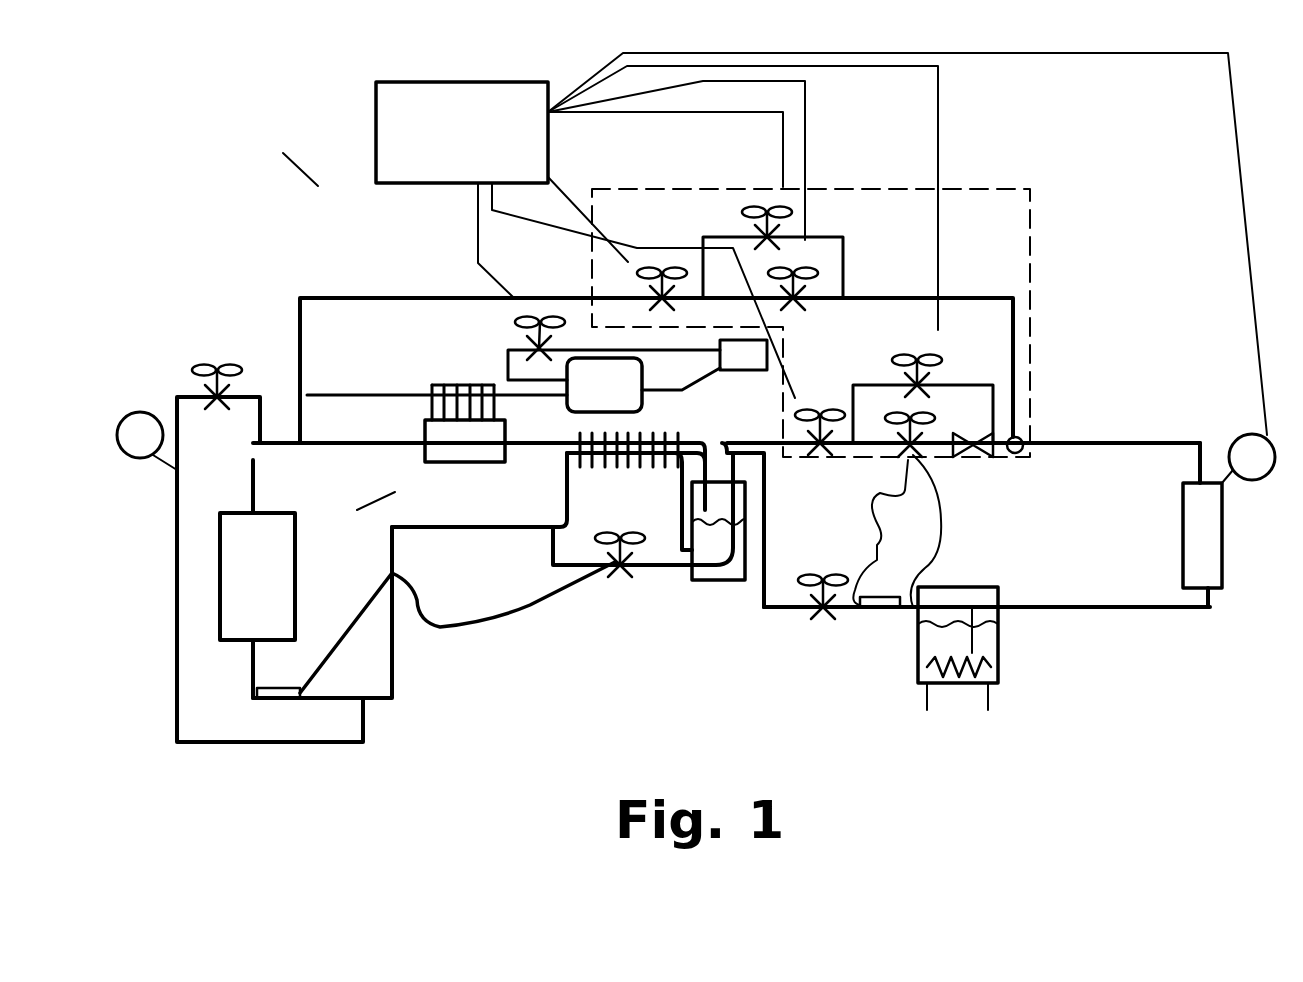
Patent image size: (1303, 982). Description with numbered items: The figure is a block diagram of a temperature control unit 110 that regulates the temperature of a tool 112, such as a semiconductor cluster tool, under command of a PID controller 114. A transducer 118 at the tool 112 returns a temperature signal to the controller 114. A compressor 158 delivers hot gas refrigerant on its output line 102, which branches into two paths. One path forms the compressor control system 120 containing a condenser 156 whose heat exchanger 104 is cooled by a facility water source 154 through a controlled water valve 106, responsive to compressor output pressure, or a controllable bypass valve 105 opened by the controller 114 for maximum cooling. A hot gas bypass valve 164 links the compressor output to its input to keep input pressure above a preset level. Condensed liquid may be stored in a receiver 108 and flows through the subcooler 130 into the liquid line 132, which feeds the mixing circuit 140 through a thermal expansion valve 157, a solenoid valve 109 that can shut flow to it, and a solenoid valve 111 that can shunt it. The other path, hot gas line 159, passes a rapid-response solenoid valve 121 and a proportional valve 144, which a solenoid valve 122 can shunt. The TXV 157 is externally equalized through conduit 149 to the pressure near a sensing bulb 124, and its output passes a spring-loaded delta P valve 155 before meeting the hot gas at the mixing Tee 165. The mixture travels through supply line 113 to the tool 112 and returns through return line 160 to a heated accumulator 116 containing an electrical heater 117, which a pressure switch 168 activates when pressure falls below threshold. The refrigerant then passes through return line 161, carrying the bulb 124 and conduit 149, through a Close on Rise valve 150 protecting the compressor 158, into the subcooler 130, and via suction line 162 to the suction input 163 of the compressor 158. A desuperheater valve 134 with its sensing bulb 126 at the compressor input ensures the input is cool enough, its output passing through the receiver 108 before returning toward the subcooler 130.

The output line 102 is at (253, 446).
The heat exchanger (HEX) 104 is at (450, 382).
The controllable bypass valve 105 is at (543, 316).
The controlled water valve 106 is at (510, 390).
The receiver 108 is at (727, 575).
The solenoid valve 109 is at (822, 410).
The temperature control unit (TCU) 110 is at (288, 156).
The solenoid valve 111 is at (928, 350).
The tool 112 is at (1225, 497).
The supply line 113 is at (1137, 442).
The controller 114 is at (376, 133).
The heated accumulator 116 is at (920, 684).
The heater 117 is at (963, 684).
The transducer 118 is at (1253, 434).
The compressor control system 120 is at (358, 517).
The solenoid valve 121 is at (660, 268).
The solenoid valve 122 is at (783, 195).
The sensing bulb 124 is at (872, 610).
The sensing bulb 126 is at (283, 688).
The subcooler 130 is at (573, 427).
The liquid line 132 is at (698, 434).
The desuperheater valve 134 is at (617, 568).
The mixing circuit 140 is at (1030, 206).
The proportional valve 144 is at (840, 270).
The conduit 149 is at (947, 540).
The Close on Rise (COR) valve 150 is at (823, 612).
The facility water source 154 is at (755, 372).
The delta P valve 155 is at (968, 456).
The condenser 156 is at (492, 462).
The thermal expansion valve (TXV) 157 is at (900, 470).
The compressor 158 is at (230, 643).
The hot gas line 159 is at (400, 293).
The return line 160 is at (1173, 607).
The return line 161 is at (780, 610).
The suction line 162 is at (433, 528).
The suction input 163 is at (262, 663).
The hot gas bypass valve (HGBV) 164 is at (218, 360).
The mixing Tee 165 is at (1016, 437).
The pressure switch 168 is at (150, 413).